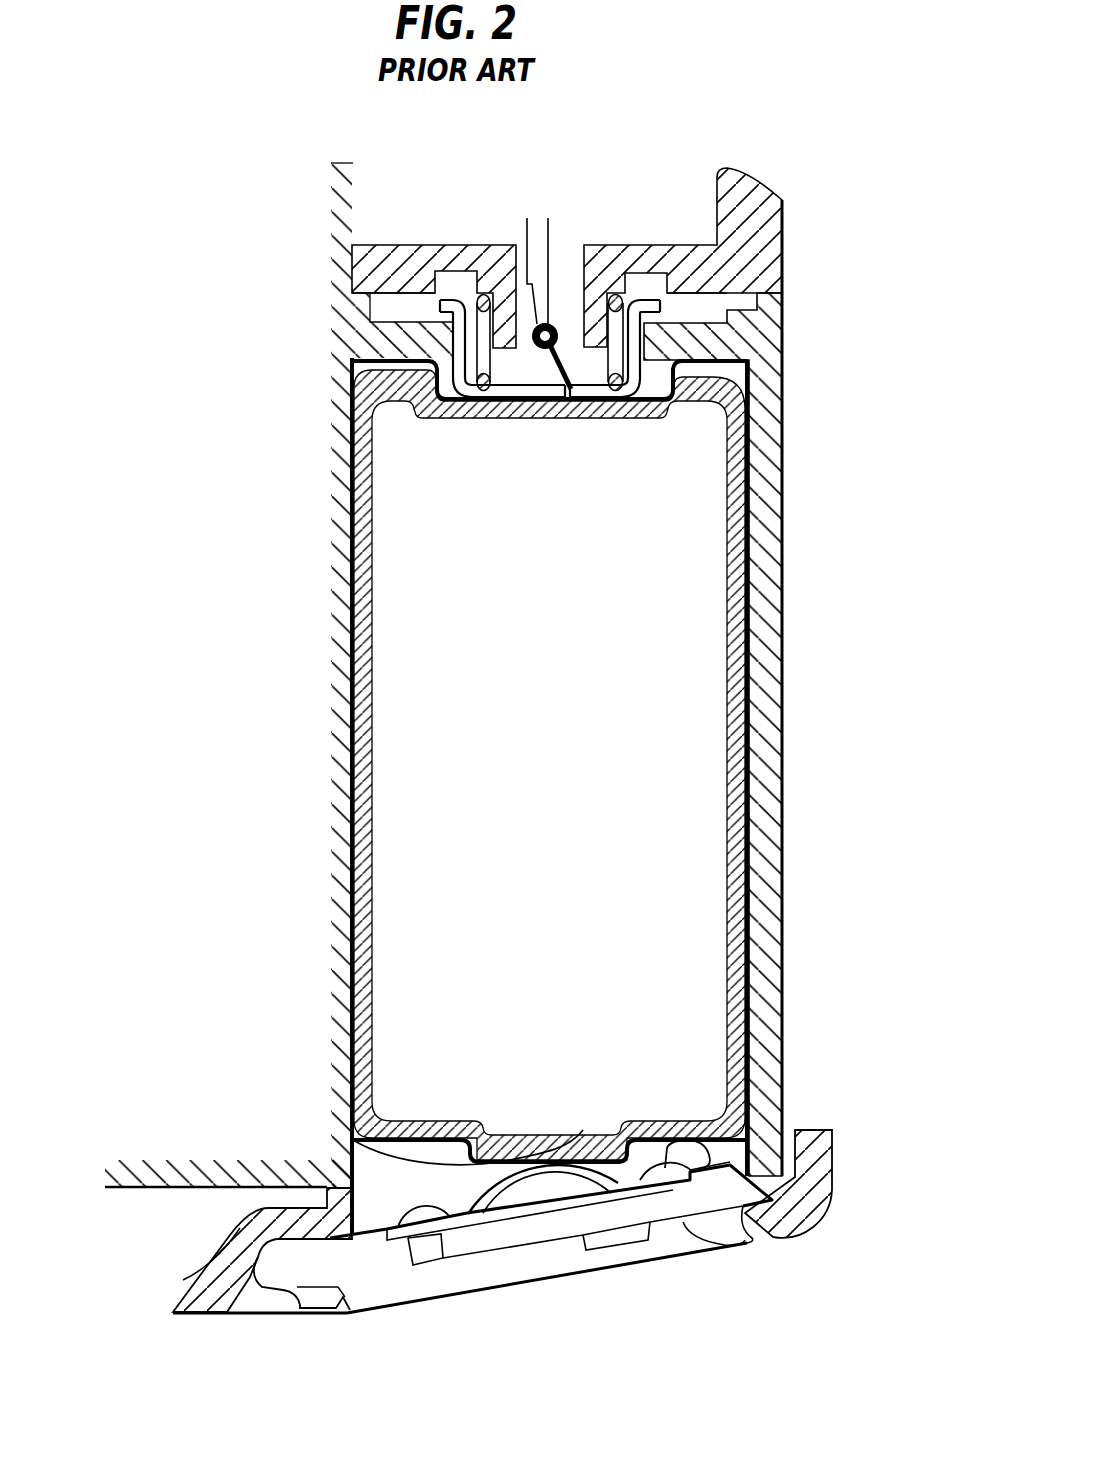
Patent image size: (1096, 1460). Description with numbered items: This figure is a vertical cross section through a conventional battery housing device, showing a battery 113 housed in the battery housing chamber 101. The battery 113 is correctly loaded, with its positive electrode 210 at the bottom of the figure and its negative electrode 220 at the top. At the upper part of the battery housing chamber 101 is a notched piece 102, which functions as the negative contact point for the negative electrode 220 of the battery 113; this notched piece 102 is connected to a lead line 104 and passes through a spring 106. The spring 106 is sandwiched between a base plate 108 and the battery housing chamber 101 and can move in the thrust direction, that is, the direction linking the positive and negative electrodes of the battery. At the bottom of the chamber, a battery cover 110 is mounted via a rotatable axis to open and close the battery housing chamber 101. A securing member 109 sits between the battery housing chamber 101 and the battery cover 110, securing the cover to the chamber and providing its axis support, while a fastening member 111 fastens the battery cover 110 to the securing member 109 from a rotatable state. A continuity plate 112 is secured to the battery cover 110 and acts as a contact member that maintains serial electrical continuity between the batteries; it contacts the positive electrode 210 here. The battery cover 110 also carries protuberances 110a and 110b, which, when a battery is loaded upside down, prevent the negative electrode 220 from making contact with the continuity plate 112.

The battery housing chamber 101 is at (328, 686).
The notched piece 102 is at (665, 307).
The lead line 104 is at (527, 232).
The spring 106 is at (645, 300).
The base plate 108 is at (748, 186).
The securing member 109 is at (813, 1140).
The battery cover 110 is at (375, 1290).
The protuberance 110a is at (692, 1140).
The protuberance 110b is at (583, 1130).
The fastening member 111 is at (613, 1247).
The continuity plate 112 is at (478, 1213).
The battery 113 is at (700, 773).
The positive electrode 210 is at (352, 1136).
The negative electrode 220 is at (430, 375).